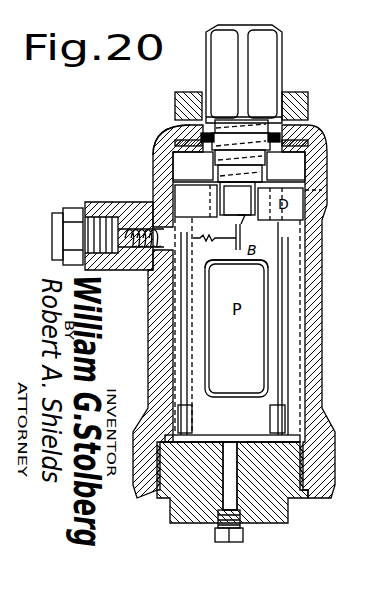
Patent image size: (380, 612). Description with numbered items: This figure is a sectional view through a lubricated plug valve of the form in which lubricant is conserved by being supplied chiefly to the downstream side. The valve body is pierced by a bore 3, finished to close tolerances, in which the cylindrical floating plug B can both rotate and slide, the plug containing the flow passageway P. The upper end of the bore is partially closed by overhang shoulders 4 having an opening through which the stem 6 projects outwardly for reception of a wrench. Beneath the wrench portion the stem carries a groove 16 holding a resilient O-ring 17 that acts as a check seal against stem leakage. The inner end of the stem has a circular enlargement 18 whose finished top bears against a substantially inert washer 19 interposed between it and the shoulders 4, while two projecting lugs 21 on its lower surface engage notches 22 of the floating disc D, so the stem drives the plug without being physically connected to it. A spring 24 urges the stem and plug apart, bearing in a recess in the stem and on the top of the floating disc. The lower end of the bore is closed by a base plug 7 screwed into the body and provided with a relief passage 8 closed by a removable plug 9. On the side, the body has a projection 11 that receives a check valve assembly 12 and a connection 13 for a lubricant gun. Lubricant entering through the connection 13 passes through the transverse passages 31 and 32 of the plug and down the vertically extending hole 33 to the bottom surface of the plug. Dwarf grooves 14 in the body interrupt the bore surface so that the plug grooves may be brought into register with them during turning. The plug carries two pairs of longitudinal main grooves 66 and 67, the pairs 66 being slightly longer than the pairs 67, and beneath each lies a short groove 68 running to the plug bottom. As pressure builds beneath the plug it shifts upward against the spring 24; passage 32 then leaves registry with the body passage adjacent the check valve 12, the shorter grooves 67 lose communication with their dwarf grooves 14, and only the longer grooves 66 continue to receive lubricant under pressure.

The bore 3 is at (326, 163).
The overhang shoulders 4 is at (172, 135).
The stem 6 is at (283, 78).
The base plug 7 is at (290, 520).
The relief passage 8 is at (229, 485).
The removable plug 9 is at (244, 538).
The projection 11 is at (108, 202).
The check valve assembly 12 is at (133, 226).
The connection 13 is at (72, 208).
The dwarf grooves 14 is at (268, 412).
The groove 16 is at (200, 132).
The O-ring 17 is at (290, 130).
The circular enlargement 18 is at (239, 151).
The washer 19 is at (158, 150).
The projecting lugs 21 is at (237, 203).
The notches 22 is at (243, 226).
The spring 24 is at (324, 190).
The transverse passage 31 is at (210, 236).
The transverse passage 32 is at (238, 250).
The vertically extending hole 33 is at (192, 350).
The pair of main grooves 66 is at (183, 293).
The pair of main grooves 67 is at (290, 262).
The short groove 68 is at (272, 428).